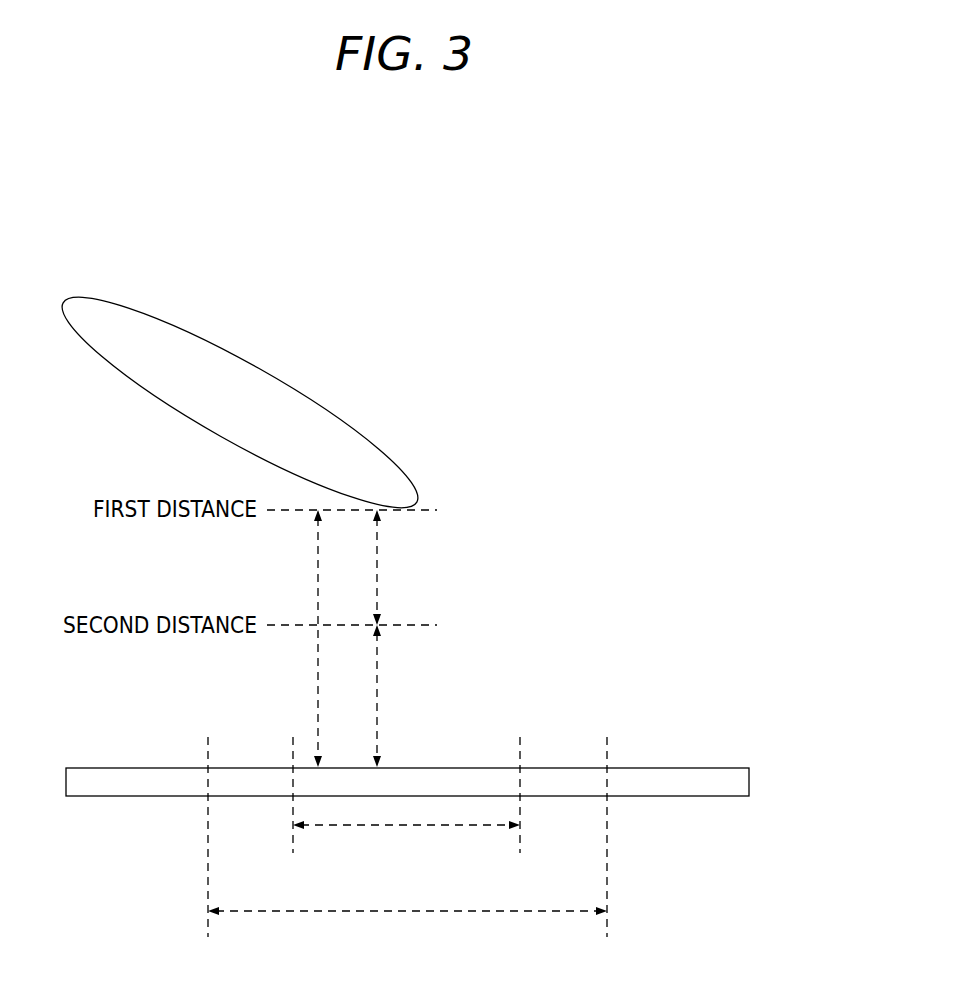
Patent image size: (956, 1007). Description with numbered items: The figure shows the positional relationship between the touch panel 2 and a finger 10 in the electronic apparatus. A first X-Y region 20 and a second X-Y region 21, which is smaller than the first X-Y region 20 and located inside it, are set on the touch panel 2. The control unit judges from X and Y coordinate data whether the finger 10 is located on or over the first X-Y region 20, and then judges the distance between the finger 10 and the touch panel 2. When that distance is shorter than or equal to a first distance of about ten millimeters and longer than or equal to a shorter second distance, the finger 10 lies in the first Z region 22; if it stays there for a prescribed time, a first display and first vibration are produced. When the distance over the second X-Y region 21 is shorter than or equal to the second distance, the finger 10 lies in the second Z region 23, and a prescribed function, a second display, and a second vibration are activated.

The touch panel 2 is at (749, 781).
The finger 10 is at (290, 386).
The first X-Y region 20 is at (305, 911).
The second X-Y region 21 is at (418, 825).
The first Z region 22 is at (378, 562).
The second Z region 23 is at (378, 685).